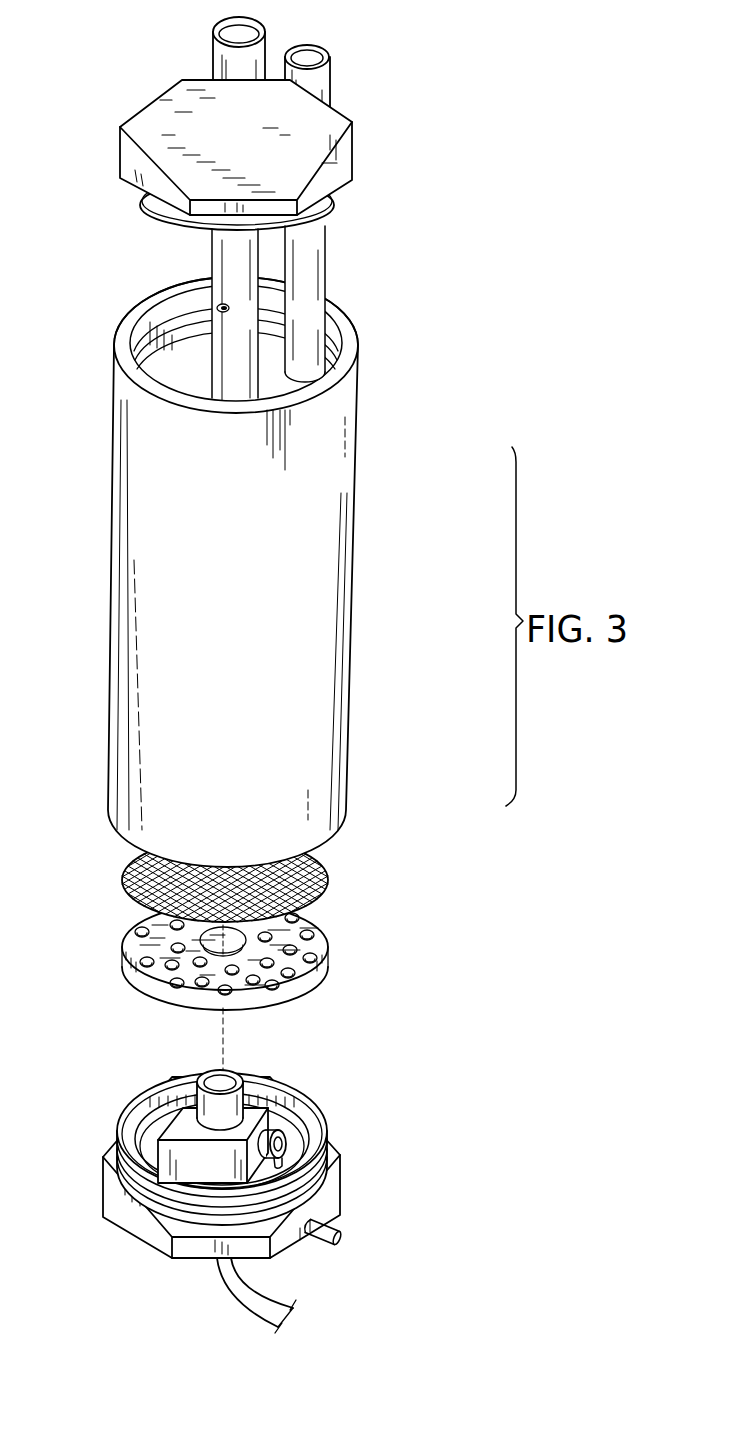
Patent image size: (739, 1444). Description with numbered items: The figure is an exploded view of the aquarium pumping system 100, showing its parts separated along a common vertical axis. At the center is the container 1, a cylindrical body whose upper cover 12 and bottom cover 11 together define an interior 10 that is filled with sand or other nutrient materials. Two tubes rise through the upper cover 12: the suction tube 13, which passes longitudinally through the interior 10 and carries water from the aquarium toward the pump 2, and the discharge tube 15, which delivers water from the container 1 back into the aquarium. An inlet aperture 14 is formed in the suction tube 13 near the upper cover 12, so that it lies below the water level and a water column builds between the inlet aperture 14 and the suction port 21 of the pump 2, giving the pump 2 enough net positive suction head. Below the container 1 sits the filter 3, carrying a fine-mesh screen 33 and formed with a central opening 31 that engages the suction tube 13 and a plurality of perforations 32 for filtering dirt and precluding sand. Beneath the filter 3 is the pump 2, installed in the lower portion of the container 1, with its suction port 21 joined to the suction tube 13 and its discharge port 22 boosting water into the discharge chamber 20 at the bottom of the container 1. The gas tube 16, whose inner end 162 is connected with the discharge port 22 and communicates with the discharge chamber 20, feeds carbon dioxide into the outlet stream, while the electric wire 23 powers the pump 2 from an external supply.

The aquarium pumping system 100 is at (428, 306).
The container 1 is at (196, 563).
The interior 10 is at (175, 326).
The upper cover 12 is at (130, 125).
The suction tube 13 is at (218, 52).
The inlet aperture 14 is at (220, 311).
The discharge tube 15 is at (317, 98).
The screen 33 is at (125, 862).
The filter 3 is at (232, 994).
The central opening 31 is at (250, 927).
The perforations 32 is at (300, 984).
The pump 2 is at (176, 1131).
The suction port 21 is at (233, 1072).
The discharge chamber 20 is at (275, 1102).
The discharge port 22 is at (287, 1140).
The inner end 162 is at (279, 1163).
The bottom cover 11 is at (103, 1158).
The gas tube 16 is at (348, 1222).
The electric wire 23 is at (233, 1282).